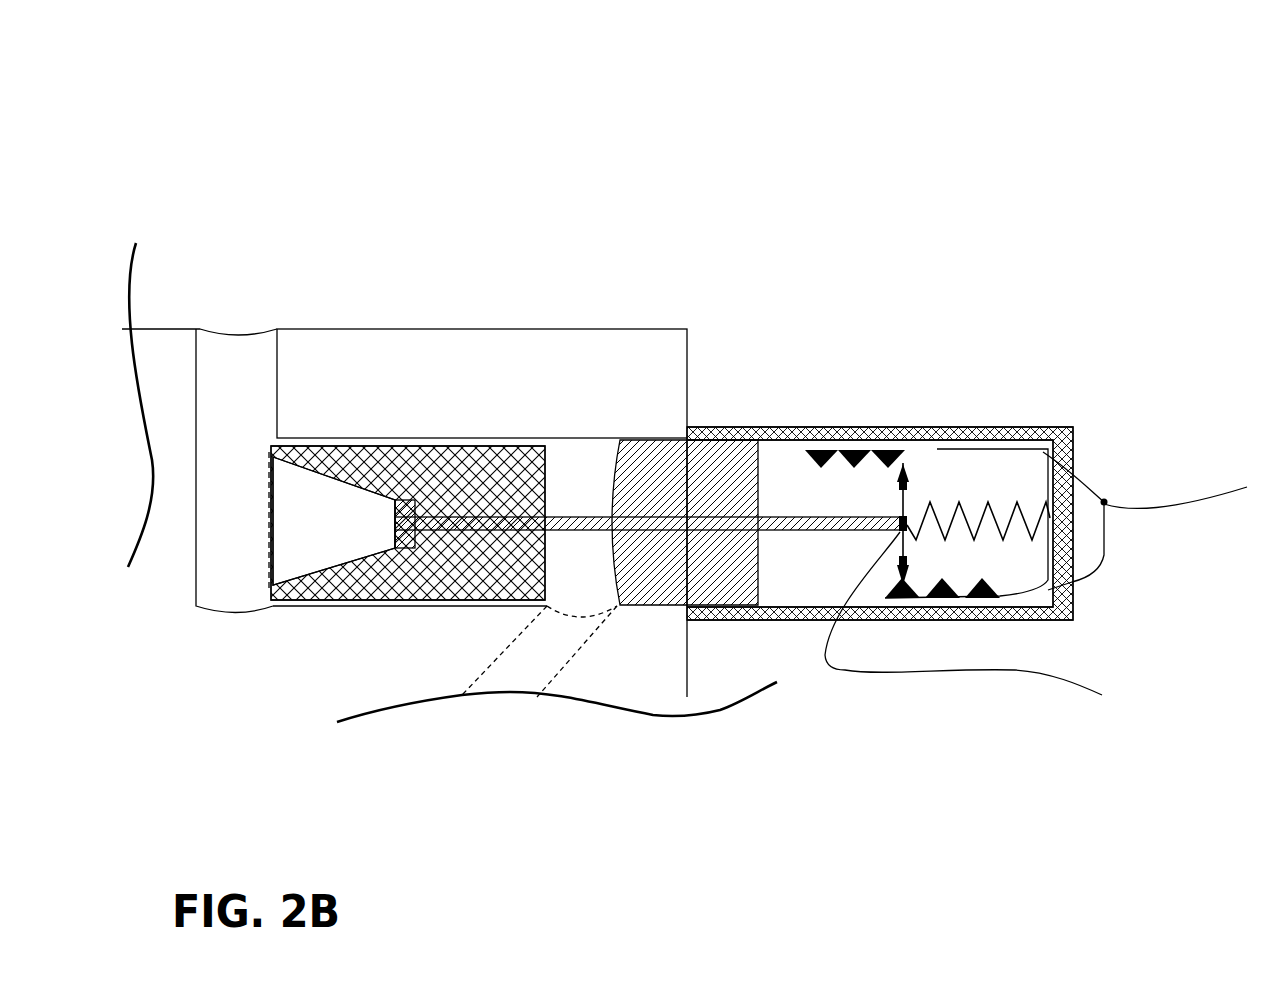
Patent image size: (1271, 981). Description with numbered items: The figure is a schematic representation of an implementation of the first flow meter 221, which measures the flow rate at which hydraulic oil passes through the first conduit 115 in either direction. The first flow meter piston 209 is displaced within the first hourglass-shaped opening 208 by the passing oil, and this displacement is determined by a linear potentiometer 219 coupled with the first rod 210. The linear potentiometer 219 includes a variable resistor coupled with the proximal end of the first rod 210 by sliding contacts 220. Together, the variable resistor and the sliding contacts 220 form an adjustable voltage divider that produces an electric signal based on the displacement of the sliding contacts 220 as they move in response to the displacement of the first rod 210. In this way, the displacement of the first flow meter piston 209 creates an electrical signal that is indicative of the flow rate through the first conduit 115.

The first conduit 115 is at (226, 378).
The first hourglass-shaped opening 208 is at (338, 455).
The first flow meter piston 209 is at (413, 520).
The first rod 210 is at (777, 523).
The linear potentiometer 219 is at (898, 397).
The sliding contacts 220 is at (905, 482).
The first flow meter 221 is at (628, 210).